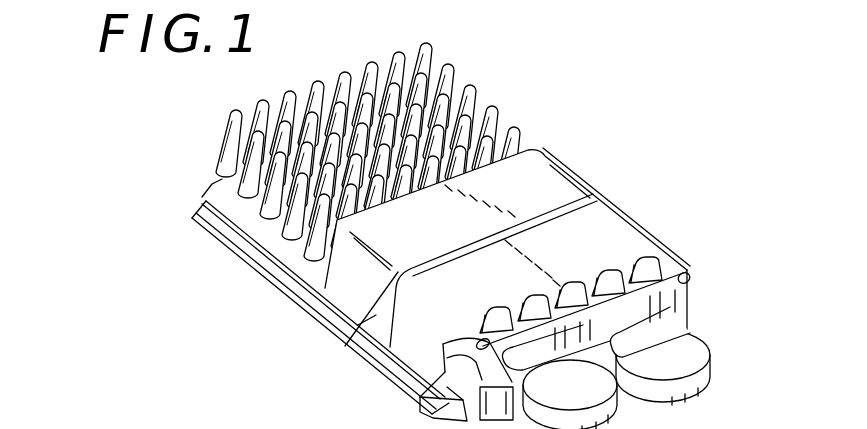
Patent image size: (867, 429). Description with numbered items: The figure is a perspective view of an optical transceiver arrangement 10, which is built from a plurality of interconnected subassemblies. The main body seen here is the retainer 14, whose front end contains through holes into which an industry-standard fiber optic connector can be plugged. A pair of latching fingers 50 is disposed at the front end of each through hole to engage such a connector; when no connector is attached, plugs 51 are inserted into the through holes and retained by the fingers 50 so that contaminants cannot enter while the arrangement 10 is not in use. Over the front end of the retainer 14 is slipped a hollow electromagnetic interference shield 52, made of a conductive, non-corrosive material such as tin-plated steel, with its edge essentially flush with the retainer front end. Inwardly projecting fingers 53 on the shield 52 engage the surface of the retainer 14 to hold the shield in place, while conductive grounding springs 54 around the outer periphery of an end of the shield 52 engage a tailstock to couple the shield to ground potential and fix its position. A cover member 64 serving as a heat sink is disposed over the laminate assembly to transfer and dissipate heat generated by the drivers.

The optical transceiver arrangement 10 is at (540, 105).
The retainer 14 is at (345, 346).
The latching fingers 50 is at (675, 312).
The plugs 51 is at (710, 377).
The electromagnetic interference shield 52 is at (607, 233).
The inwardly projecting fingers 53 is at (440, 348).
The conductive grounding springs 54 is at (647, 263).
The cover member 64 is at (202, 197).